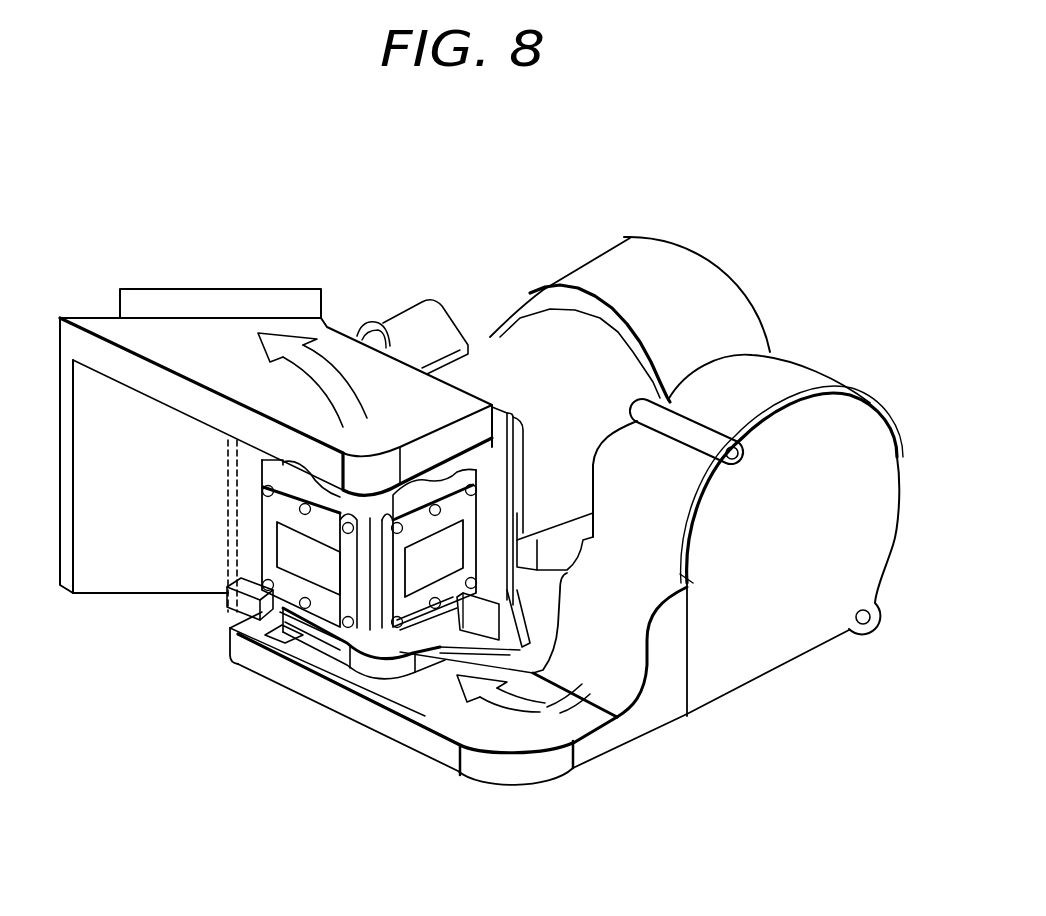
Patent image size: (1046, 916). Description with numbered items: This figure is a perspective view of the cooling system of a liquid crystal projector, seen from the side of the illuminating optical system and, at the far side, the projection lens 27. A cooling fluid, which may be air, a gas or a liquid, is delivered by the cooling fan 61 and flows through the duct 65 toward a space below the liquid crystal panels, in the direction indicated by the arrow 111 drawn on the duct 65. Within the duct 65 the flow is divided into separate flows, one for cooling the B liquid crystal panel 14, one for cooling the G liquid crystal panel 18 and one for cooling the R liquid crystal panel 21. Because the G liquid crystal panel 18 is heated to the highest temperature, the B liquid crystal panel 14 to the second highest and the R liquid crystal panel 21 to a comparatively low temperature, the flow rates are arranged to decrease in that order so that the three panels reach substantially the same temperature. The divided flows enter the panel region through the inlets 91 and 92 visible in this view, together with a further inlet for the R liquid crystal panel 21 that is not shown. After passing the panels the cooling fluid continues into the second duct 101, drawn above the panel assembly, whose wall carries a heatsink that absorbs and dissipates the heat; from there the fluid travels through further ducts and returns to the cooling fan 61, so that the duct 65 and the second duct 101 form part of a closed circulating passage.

The B liquid crystal panel 14 is at (347, 622).
The G liquid crystal panel 18 is at (293, 553).
The R liquid crystal panel 21 is at (242, 483).
The projection lens 27 is at (713, 287).
The cooling fan 61 is at (855, 420).
The duct 65 is at (618, 735).
The inlet 91 is at (437, 640).
The inlet 92 is at (300, 643).
The second duct 101 is at (200, 338).
The arrow 111 is at (518, 708).